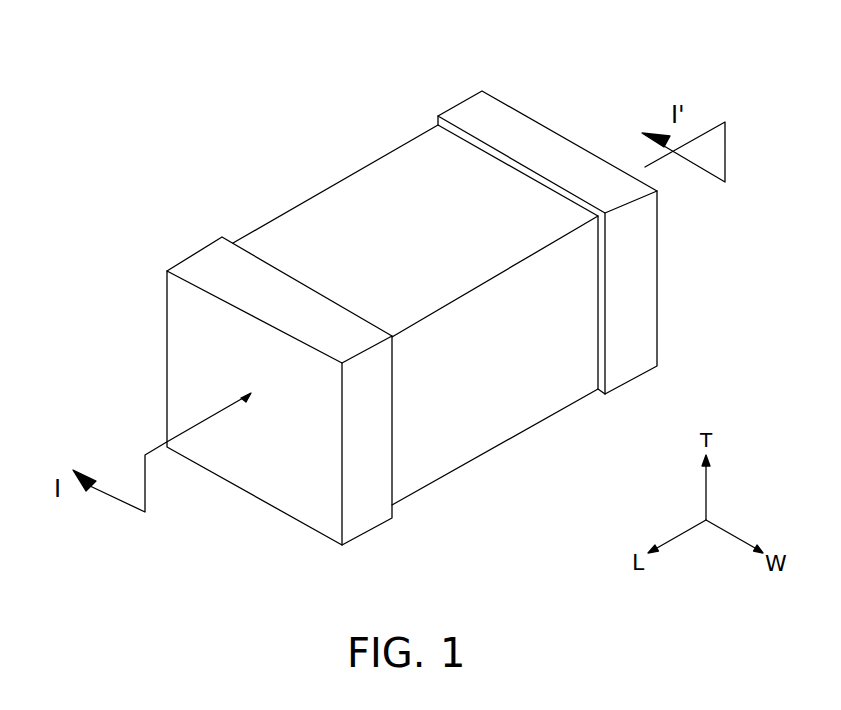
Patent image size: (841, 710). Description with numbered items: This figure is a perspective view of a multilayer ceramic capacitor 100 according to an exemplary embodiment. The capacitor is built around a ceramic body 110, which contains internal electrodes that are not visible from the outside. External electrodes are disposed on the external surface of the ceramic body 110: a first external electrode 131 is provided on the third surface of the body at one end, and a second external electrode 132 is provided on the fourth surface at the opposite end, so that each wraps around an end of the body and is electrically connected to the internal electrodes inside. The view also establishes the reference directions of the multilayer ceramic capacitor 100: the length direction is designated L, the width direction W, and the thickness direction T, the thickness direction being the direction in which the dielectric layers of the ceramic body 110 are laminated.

The multilayer ceramic capacitor 100 is at (188, 50).
The ceramic body 110 is at (418, 170).
The first external electrode 131 is at (208, 248).
The second external electrode 132 is at (538, 115).